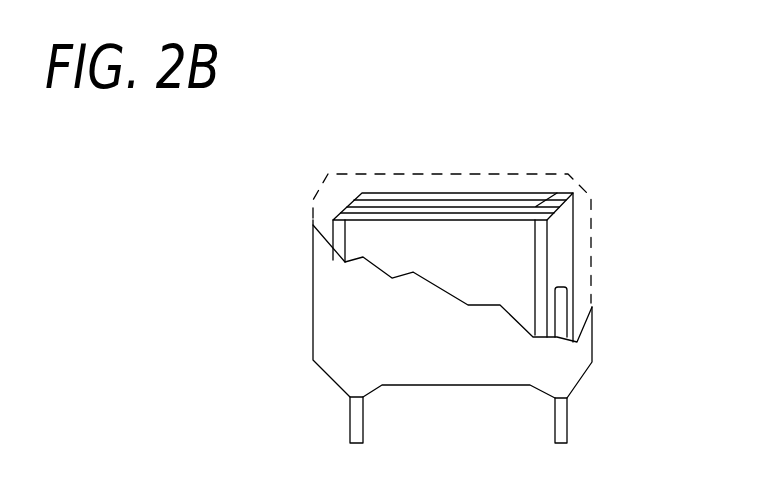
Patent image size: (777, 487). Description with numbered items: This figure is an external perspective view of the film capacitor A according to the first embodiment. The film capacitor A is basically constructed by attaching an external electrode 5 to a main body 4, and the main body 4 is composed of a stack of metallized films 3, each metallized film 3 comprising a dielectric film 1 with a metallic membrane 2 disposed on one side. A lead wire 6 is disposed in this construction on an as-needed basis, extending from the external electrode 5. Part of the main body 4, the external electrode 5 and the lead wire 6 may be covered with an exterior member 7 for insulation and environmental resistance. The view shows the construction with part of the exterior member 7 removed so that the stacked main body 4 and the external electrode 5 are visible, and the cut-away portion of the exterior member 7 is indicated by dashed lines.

The dielectric film 1 is at (427, 208).
The metallic membrane 2 is at (400, 198).
The metallized film 3 is at (454, 138).
The main body 4 is at (448, 178).
The external electrode 5 is at (330, 213).
The lead wire 6 is at (348, 427).
The exterior member 7 is at (313, 317).
The film capacitor A is at (613, 138).